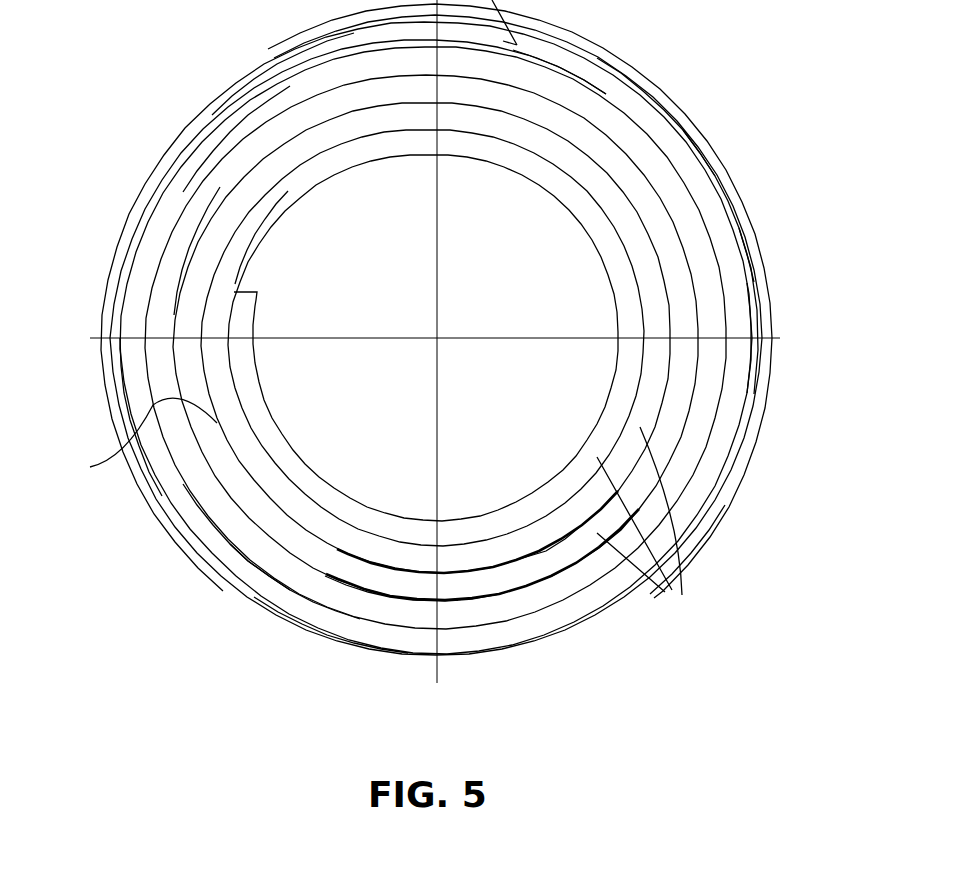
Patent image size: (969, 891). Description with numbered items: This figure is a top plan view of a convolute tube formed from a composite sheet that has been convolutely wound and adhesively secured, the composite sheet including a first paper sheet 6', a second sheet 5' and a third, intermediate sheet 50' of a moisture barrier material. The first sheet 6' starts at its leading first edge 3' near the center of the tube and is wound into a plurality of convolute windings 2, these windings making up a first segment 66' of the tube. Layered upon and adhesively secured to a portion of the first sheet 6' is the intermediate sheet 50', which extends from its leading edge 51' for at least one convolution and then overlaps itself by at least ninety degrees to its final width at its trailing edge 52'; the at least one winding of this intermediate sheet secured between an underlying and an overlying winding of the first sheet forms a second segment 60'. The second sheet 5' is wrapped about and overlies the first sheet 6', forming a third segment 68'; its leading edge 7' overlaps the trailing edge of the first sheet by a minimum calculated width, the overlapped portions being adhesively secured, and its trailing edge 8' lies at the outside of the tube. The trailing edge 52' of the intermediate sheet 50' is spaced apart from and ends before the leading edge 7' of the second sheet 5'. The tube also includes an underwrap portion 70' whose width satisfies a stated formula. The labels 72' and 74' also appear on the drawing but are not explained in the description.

The convolute windings 2 is at (660, 592).
The first edge 3' is at (183, 213).
The second sheet 5' is at (688, 117).
The first sheet 6' is at (216, 133).
The first edge 7' is at (780, 338).
The second edge 8' is at (331, 655).
The third sheet 50' is at (198, 537).
The first edge 51' is at (130, 417).
The second edge 52' is at (274, 605).
The second segment 60' is at (141, 251).
The first segment 66' is at (479, 598).
The third segment 68' is at (798, 296).
The underwrap portion 70' is at (606, 67).
The upper layer 72' is at (267, 63).
The side layer 74' is at (755, 206).